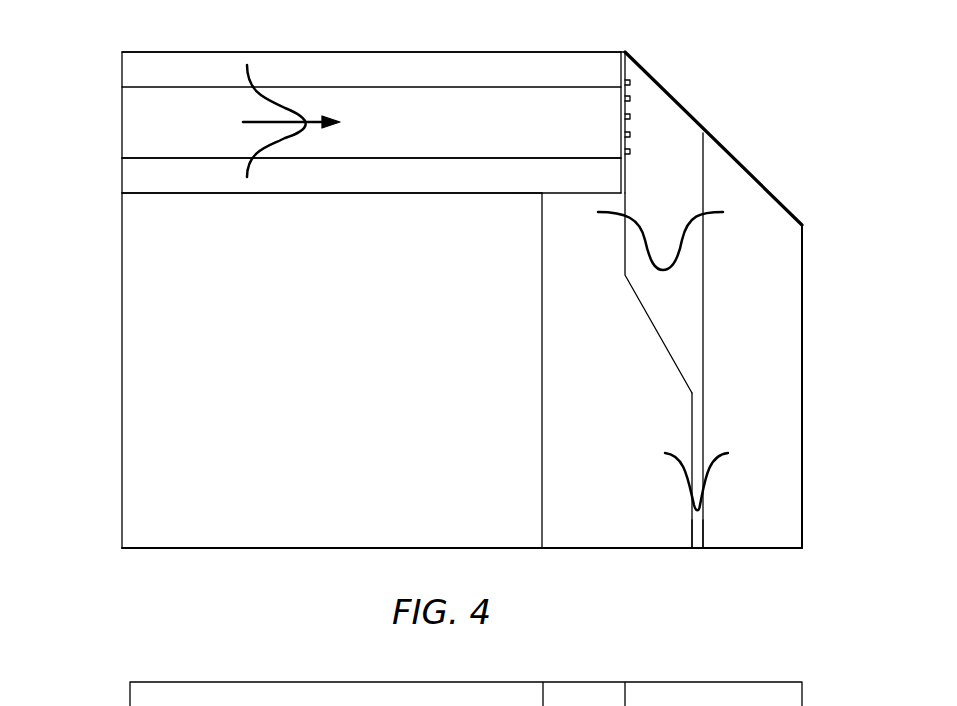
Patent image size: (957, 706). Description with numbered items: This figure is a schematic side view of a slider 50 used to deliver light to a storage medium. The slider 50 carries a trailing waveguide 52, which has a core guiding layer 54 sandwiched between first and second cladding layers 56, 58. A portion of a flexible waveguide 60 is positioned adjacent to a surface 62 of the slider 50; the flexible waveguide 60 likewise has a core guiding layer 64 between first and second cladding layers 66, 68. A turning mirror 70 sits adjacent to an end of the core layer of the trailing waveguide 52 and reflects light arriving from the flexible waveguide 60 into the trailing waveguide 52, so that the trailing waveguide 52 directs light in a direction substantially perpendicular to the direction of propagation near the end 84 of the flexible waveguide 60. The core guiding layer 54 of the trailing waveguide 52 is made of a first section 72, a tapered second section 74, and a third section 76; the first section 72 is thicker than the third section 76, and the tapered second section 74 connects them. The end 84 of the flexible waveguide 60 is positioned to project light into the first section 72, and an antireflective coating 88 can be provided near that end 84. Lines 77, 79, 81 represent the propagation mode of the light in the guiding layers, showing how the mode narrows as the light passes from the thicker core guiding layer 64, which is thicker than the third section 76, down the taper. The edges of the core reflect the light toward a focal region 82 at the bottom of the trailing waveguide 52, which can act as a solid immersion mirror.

The slider 50 is at (108, 494).
The trailing waveguide 52 is at (802, 560).
The core guiding layer 54 is at (697, 445).
The first cladding layer 56 is at (780, 517).
The second cladding layer 58 is at (555, 508).
The flexible waveguide 60 is at (110, 52).
The surface 62 is at (225, 193).
The core guiding layer 64 is at (145, 143).
The first cladding layer 66 is at (157, 57).
The second cladding layer 68 is at (197, 178).
The turning mirror 70 is at (728, 147).
The first section 72 is at (693, 188).
The second section 74 is at (688, 330).
The third section 76 is at (697, 523).
The line 77 is at (280, 107).
The line 79 is at (687, 248).
The line 81 is at (713, 467).
The focal region 82 is at (697, 553).
The end 84 is at (620, 148).
The antireflective coating 88 is at (620, 126).